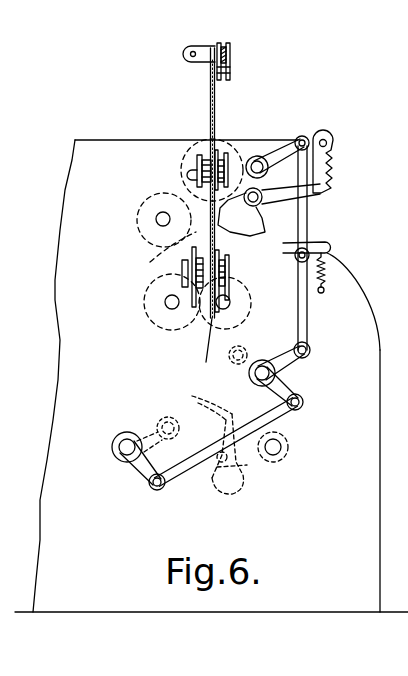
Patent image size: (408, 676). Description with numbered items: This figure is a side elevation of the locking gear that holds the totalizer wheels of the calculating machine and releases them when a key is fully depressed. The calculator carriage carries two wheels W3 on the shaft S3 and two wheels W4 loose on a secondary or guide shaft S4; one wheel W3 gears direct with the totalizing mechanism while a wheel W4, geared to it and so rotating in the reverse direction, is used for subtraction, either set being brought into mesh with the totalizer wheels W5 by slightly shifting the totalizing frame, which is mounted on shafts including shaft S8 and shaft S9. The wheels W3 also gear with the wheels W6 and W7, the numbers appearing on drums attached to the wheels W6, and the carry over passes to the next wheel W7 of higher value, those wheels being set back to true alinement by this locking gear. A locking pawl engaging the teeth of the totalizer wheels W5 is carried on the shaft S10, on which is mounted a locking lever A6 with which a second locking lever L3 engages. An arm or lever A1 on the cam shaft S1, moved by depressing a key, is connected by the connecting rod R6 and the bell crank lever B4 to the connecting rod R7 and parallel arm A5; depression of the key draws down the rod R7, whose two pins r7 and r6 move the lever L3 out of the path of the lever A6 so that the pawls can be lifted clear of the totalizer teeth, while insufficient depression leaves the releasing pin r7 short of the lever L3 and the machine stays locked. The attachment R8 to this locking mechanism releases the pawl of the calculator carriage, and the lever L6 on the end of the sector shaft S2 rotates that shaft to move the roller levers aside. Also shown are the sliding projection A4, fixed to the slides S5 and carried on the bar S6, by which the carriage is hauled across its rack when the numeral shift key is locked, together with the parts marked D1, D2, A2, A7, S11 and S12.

The bar S6 is at (222, 43).
The sliding projection A4 is at (232, 52).
The slides S5 is at (228, 65).
The disk D1 is at (201, 157).
The shaft S9 is at (191, 175).
The totalizer wheels W7 is at (181, 159).
The stud S11 is at (251, 192).
The parallel arm A5 is at (297, 141).
The releasing pin r7 is at (308, 138).
The wheels W6 is at (144, 211).
The shaft S8 is at (158, 222).
The shaft S10 is at (262, 236).
The second locking lever L3 is at (321, 192).
The totalizer wheels W5 is at (178, 261).
The locking lever A6 is at (333, 247).
The pin r6 is at (328, 260).
The wheels W4 is at (158, 302).
The wheels W3 is at (246, 295).
The shaft S3 is at (231, 303).
The connecting rod R7 is at (307, 305).
The secondary or guide shaft S4 is at (170, 307).
The disk D2 is at (204, 312).
The arm A7 is at (208, 351).
The attachment R8 is at (244, 352).
The bell crank lever B4 is at (288, 361).
The lever L6 is at (196, 399).
The arm A2 is at (150, 437).
The stud S12 is at (257, 378).
The cam shaft S1 is at (122, 452).
The arm or lever A1 is at (146, 488).
The connecting rod R6 is at (188, 462).
The carriage shaft S2 is at (276, 456).